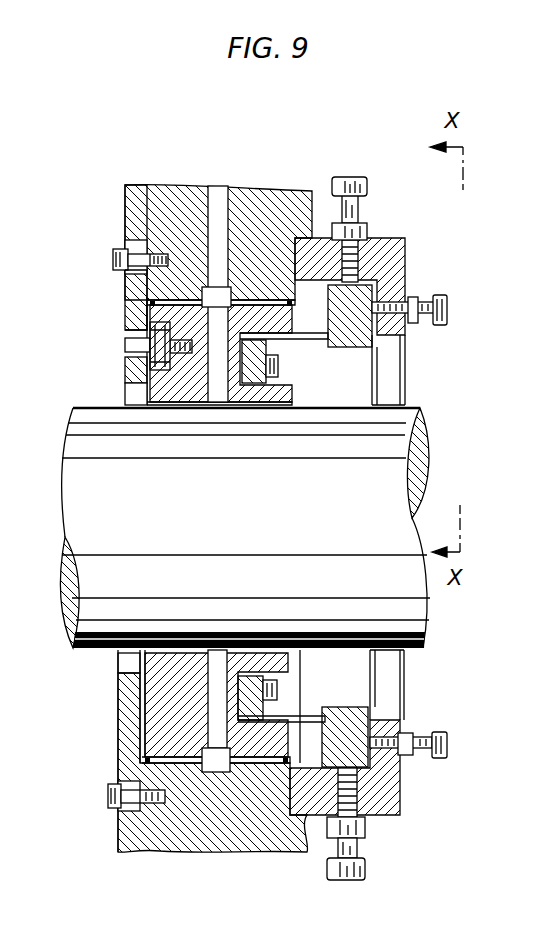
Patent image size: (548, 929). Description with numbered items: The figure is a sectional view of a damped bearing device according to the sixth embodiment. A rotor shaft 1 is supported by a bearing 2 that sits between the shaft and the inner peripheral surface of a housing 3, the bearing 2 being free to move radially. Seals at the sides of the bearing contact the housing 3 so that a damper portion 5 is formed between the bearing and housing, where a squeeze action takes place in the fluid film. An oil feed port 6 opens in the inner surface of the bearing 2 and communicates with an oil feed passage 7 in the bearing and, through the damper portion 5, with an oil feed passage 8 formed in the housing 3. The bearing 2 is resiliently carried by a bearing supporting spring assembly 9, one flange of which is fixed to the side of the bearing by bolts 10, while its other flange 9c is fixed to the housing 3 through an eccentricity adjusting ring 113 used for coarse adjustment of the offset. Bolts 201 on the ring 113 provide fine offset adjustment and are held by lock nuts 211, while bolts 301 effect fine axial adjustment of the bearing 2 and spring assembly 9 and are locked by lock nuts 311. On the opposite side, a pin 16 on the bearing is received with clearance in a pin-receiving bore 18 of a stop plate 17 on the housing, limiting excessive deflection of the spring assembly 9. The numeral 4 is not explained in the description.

The rotor shaft 1 is at (80, 441).
The bearing 2 is at (178, 402).
The housing 3 is at (284, 192).
The fixing bolt 4 is at (130, 284).
The damper portion 5 is at (177, 232).
The oil feed port 6 is at (217, 403).
The oil feed passage 7 is at (162, 386).
The oil feed passage 8 is at (218, 186).
The bearing supporting spring assembly 9 is at (352, 352).
The flange 9c is at (372, 343).
The bolts 10 is at (274, 370).
The pin 16 is at (160, 347).
The stop plate 17 is at (128, 300).
The pin-receiving bore 18 is at (125, 340).
The eccentricity adjusting ring 113 is at (392, 262).
The bolts 201 is at (350, 178).
The lock nuts 211 is at (366, 235).
The bolts 301 is at (447, 298).
The lock nuts 311 is at (420, 318).